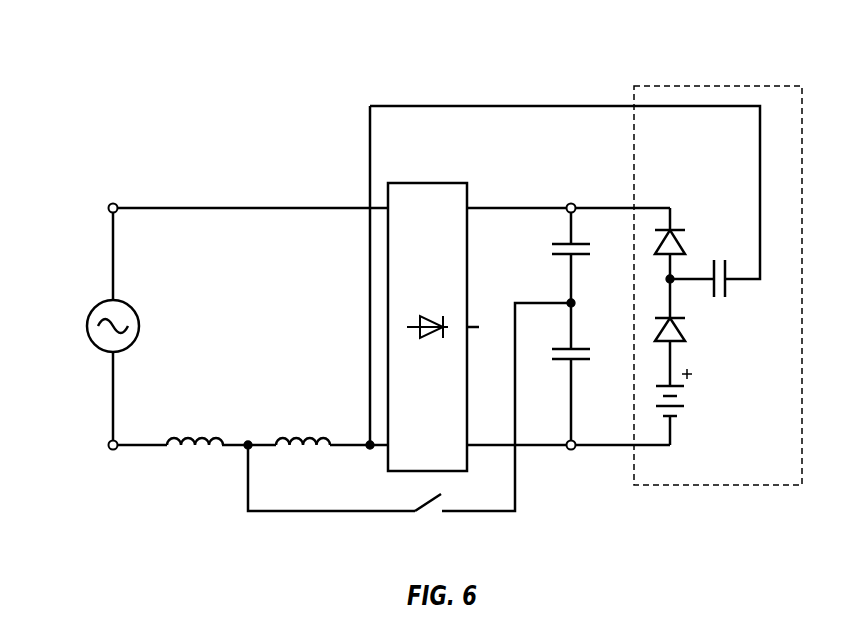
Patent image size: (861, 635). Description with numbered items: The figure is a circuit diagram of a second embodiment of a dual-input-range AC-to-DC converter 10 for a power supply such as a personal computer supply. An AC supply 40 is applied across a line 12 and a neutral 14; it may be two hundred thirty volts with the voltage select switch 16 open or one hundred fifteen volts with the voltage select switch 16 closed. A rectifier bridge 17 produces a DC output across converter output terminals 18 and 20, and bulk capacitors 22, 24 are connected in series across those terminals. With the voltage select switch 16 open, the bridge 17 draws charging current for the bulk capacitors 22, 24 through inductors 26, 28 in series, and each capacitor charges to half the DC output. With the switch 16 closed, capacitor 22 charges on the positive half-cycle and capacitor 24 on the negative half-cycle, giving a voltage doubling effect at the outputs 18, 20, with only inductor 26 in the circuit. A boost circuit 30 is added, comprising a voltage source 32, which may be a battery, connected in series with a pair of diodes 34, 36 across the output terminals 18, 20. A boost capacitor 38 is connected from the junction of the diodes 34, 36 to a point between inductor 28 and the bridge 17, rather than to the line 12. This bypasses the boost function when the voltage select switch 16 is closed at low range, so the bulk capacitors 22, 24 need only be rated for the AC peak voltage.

The dual-input-range AC-to-DC converter 10 is at (247, 73).
The line 12 is at (110, 205).
The neutral 14 is at (111, 449).
The voltage select switch 16 is at (409, 527).
The rectifier bridge 17 is at (440, 305).
The converter output terminal 18 is at (568, 205).
The converter output terminal 20 is at (605, 481).
The bulk capacitor 22 is at (548, 248).
The bulk capacitor 24 is at (550, 357).
The inductor 26 is at (209, 414).
The inductor 28 is at (318, 414).
The boost circuit 30 is at (718, 264).
The voltage source 32 is at (705, 418).
The diode 34 is at (677, 343).
The diode 36 is at (680, 236).
The boost capacitor 38 is at (722, 297).
The AC supply 40 is at (101, 306).